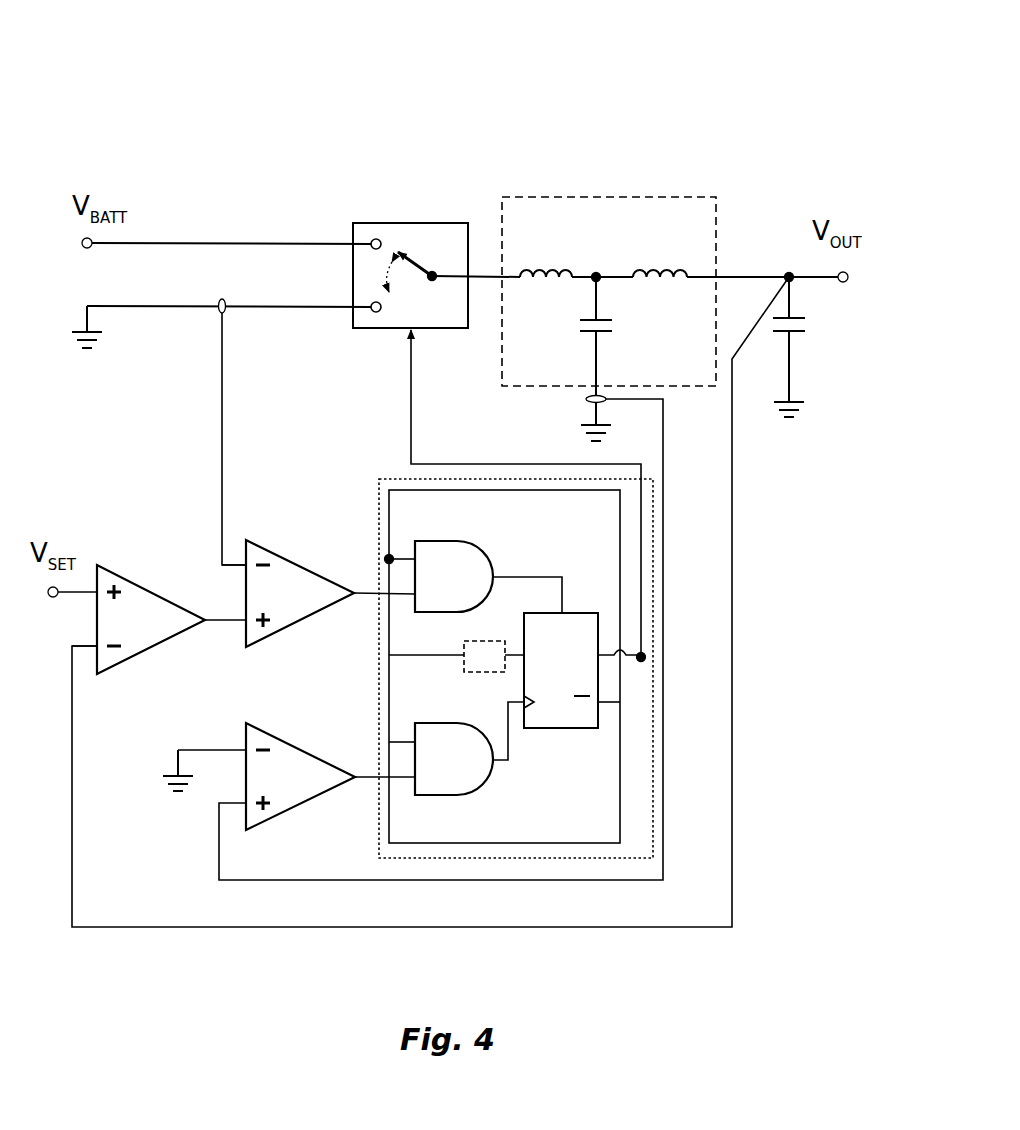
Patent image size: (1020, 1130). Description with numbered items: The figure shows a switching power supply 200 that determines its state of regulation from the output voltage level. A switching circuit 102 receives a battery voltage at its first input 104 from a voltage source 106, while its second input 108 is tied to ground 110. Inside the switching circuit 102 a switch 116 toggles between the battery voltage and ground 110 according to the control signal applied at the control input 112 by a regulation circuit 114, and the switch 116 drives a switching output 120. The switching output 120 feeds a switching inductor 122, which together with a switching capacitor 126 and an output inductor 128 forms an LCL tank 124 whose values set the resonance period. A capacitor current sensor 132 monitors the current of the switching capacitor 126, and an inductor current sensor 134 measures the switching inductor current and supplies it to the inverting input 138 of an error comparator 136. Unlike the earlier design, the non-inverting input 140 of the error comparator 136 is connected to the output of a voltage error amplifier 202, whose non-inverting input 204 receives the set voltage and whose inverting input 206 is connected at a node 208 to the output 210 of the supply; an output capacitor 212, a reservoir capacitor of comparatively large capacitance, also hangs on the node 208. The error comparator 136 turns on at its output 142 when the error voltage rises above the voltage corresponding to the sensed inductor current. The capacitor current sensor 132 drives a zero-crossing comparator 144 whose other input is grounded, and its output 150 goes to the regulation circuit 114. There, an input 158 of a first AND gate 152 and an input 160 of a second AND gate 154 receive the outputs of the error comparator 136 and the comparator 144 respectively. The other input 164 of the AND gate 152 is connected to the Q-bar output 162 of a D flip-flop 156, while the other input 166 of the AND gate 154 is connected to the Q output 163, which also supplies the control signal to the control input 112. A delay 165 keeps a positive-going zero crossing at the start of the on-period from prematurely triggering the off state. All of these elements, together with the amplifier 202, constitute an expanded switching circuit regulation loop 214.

The switching power supply 200 is at (515, 72).
The switching circuit 102 is at (418, 223).
The first input 104 is at (352, 244).
The voltage source 106 is at (90, 250).
The second input 108 is at (352, 306).
The ground 110 is at (87, 354).
The control input 112 is at (408, 368).
The regulation circuit 114 is at (378, 500).
The switch 116 is at (422, 282).
The switching output 120 is at (486, 272).
The switching inductor 122 is at (548, 270).
The LCL tank 124 is at (648, 196).
The switching capacitor 126 is at (584, 332).
The output inductor 128 is at (654, 270).
The capacitor current sensor 132 is at (586, 399).
The inductor current sensor 134 is at (226, 300).
The error comparator 136 is at (300, 593).
The inverting input 138 is at (233, 562).
The non-inverting input 140 is at (218, 624).
The output 142 is at (366, 590).
The comparator 144 is at (266, 776).
The output 150 is at (366, 776).
The AND gate 152 is at (488, 577).
The AND gate 154 is at (469, 748).
The D flip-flop 156 is at (544, 730).
The input 158 is at (402, 602).
The input 160 is at (400, 780).
The Q-bar output 162 is at (614, 712).
The Q output 163 is at (638, 552).
The input 164 is at (398, 554).
The delay 165 is at (478, 674).
The input 166 is at (402, 740).
The voltage error amplifier 202 is at (151, 619).
The non-inverting input 204 is at (58, 598).
The inverting input 206 is at (78, 656).
The node 208 is at (785, 274).
The output 210 is at (843, 283).
The output capacitor 212 is at (800, 338).
The switching circuit regulation loop 214 is at (670, 917).